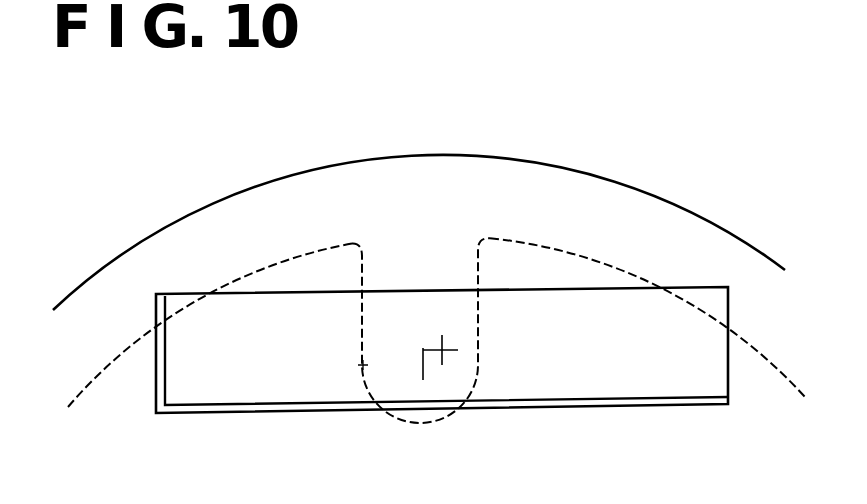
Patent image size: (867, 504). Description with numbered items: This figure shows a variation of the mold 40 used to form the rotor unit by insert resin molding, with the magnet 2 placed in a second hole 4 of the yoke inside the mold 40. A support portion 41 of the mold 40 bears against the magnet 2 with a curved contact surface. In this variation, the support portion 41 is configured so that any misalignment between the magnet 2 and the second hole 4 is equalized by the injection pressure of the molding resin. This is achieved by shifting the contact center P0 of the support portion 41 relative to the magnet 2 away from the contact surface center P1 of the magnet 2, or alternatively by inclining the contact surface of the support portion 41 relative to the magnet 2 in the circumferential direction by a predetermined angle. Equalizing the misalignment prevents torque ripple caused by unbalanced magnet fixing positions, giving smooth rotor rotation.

The mold 40 is at (605, 178).
The support portion 41 is at (447, 267).
The magnet 2 is at (639, 366).
The second hole 4 is at (565, 402).
The contact center P0 is at (423, 365).
The contact surface center P1 is at (445, 345).